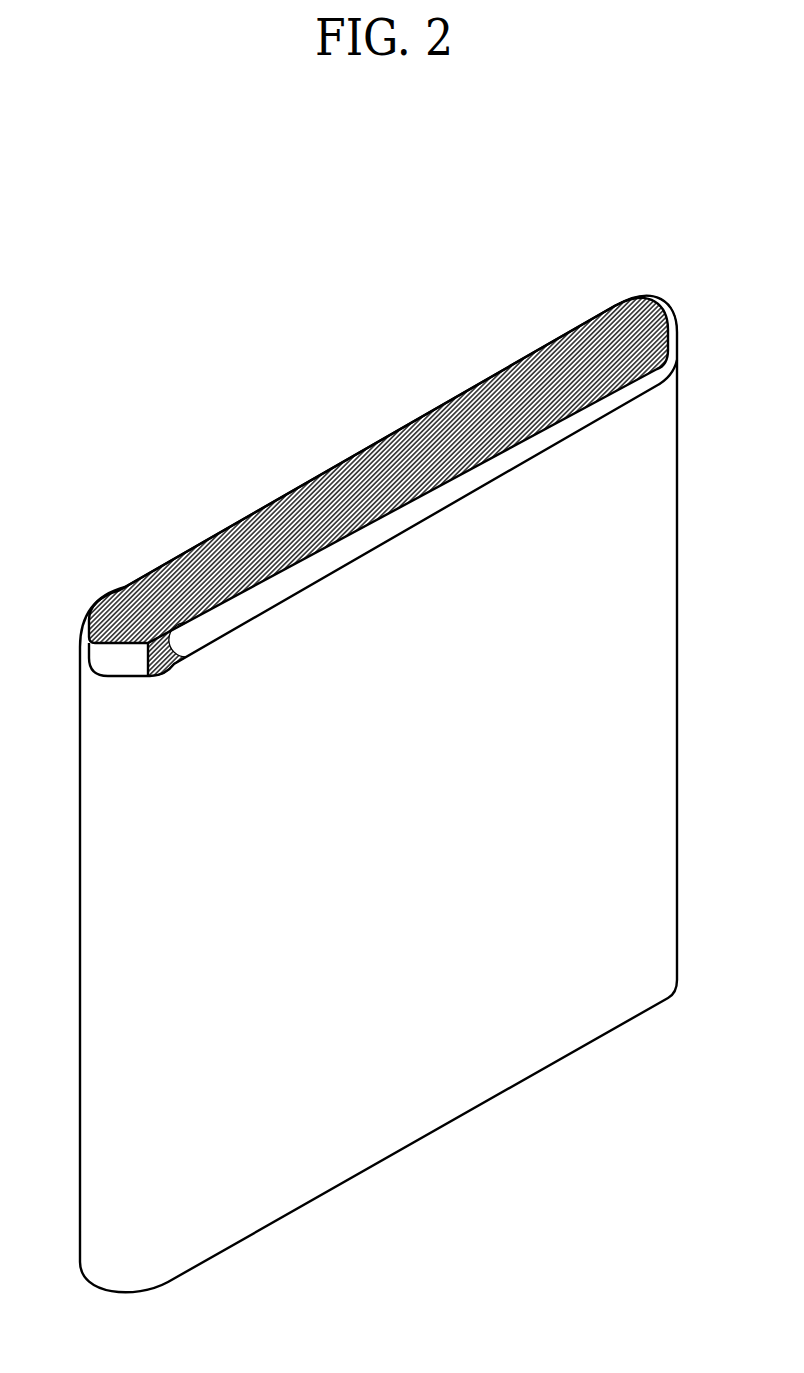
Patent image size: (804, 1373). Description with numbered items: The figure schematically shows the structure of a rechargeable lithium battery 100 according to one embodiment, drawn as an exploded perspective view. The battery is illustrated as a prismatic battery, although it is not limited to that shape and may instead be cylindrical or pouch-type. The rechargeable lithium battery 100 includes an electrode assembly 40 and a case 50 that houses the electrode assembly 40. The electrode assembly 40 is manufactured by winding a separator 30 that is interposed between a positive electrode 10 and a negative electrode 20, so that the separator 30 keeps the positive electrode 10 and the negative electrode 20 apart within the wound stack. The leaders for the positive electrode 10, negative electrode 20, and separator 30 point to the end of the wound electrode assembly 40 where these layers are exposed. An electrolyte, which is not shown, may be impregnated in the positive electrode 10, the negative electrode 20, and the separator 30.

The rechargeable lithium battery 100 is at (392, 167).
The positive electrode 10 is at (672, 316).
The negative electrode 20 is at (627, 300).
The separator 30 is at (647, 313).
The electrode assembly 40 is at (355, 450).
The case 50 is at (660, 655).